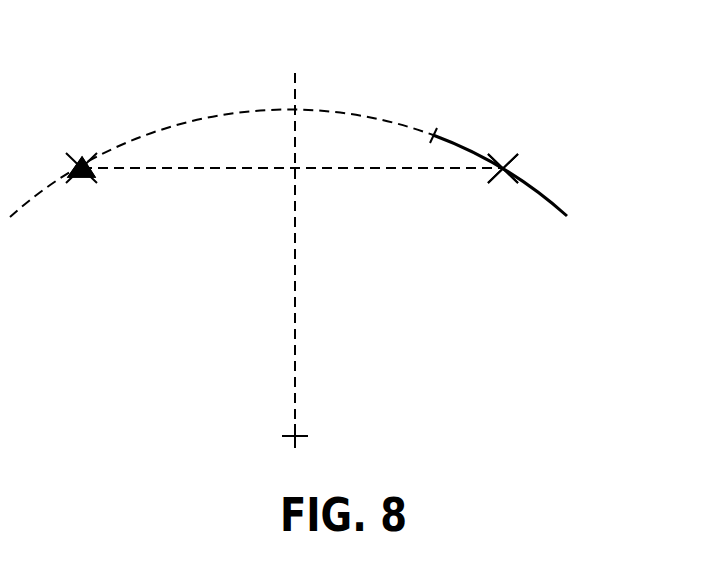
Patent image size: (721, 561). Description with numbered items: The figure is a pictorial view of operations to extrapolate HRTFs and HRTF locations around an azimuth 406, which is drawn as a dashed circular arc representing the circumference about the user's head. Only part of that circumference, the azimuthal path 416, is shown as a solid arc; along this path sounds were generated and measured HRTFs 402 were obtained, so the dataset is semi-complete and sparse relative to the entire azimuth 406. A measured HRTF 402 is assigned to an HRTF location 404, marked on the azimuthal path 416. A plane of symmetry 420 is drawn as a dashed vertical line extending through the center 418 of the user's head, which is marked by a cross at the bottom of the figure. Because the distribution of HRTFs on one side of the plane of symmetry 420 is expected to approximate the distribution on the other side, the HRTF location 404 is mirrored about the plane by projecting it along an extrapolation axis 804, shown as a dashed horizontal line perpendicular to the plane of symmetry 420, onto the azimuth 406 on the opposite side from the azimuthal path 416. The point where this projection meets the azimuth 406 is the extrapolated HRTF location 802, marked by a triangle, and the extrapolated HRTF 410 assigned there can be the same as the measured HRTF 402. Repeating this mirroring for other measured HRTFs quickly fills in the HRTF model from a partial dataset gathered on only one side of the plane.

The measured HRTF 402 is at (508, 166).
The HRTF location 404 is at (503, 168).
The azimuth 406 is at (183, 123).
The extrapolated HRTF 410 is at (72, 167).
The azimuthal path 416 is at (547, 203).
The center of head 418 is at (295, 434).
The plane of symmetry 420 is at (295, 307).
The extrapolated HRTF location 802 is at (53, 113).
The extrapolation axis 804 is at (348, 168).